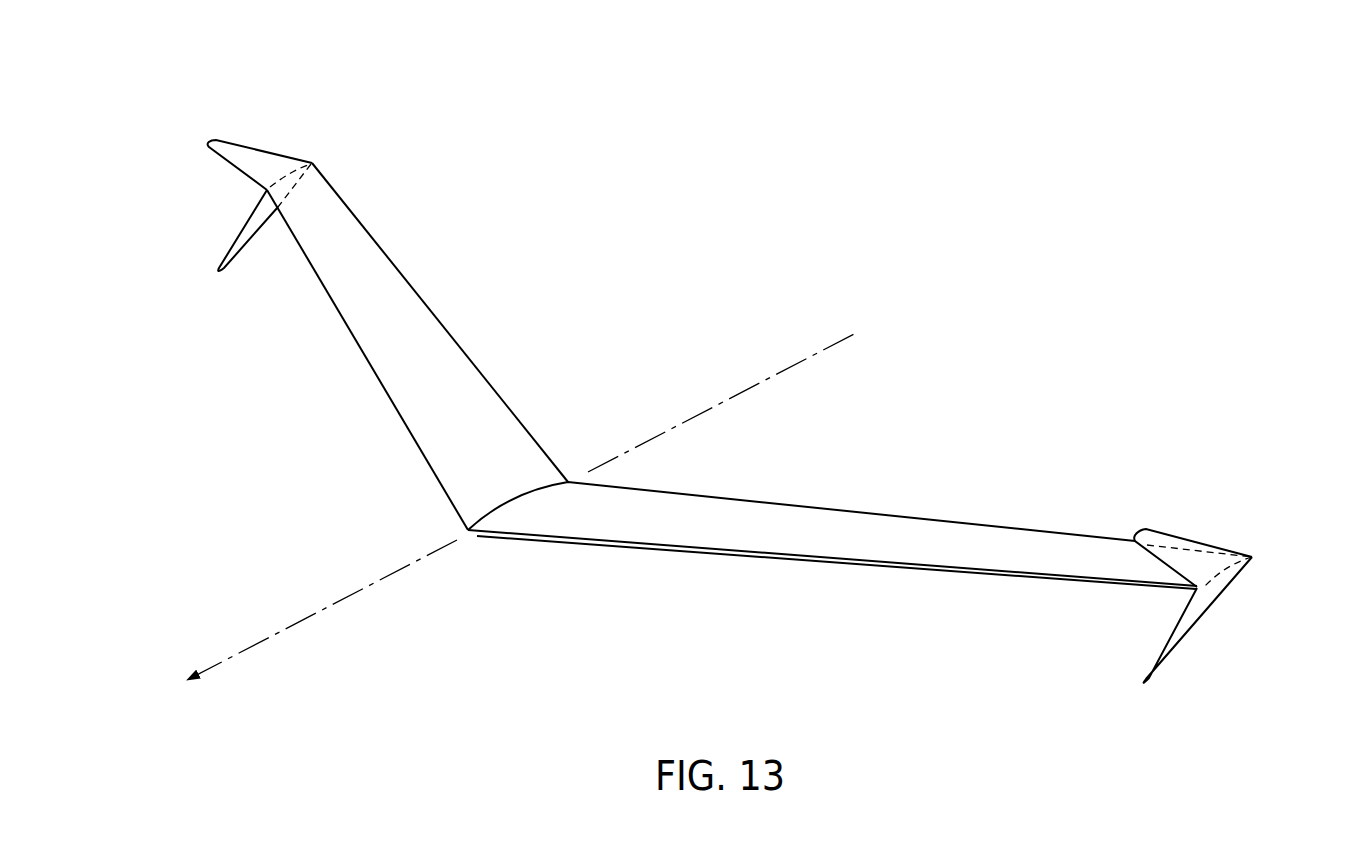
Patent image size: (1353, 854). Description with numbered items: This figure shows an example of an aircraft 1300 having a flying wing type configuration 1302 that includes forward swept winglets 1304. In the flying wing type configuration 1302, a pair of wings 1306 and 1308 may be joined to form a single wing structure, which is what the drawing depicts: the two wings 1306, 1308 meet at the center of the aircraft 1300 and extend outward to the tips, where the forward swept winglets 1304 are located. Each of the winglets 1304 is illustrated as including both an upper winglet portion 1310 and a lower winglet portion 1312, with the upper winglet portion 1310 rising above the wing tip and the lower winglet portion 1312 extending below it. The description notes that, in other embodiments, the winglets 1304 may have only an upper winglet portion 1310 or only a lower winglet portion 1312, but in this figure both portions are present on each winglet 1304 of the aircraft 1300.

The aircraft 1300 is at (628, 335).
The flying wing type configuration 1302 is at (593, 553).
The forward swept winglets 1304 is at (747, 378).
The wing 1306 is at (808, 558).
The wing 1308 is at (380, 384).
The upper winglet portion 1310 is at (232, 147).
The lower winglet portion 1312 is at (233, 240).